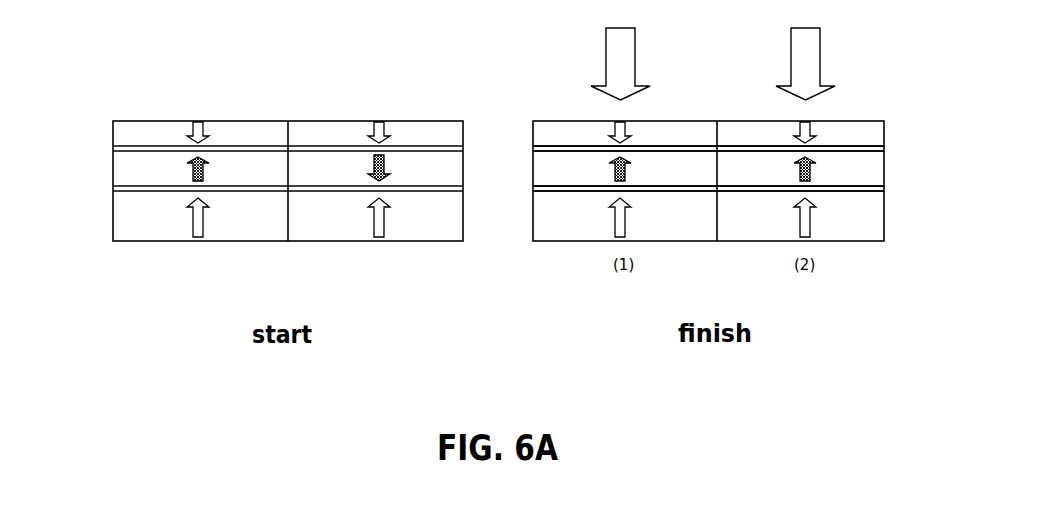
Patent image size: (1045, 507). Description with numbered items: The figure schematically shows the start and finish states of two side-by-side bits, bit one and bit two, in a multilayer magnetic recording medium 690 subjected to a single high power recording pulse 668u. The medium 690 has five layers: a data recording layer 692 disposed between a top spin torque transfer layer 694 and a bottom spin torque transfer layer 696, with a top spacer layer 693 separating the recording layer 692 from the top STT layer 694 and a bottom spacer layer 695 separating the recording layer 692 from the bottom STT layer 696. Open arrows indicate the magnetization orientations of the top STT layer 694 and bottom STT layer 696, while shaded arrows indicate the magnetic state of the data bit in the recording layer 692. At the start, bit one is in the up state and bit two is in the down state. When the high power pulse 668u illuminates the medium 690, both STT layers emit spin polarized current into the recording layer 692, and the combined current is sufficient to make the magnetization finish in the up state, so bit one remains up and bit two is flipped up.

The magnetic recording medium 690 is at (100, 120).
The top spacer layer 693 is at (533, 148).
The bottom spacer layer 695 is at (533, 193).
The top spin torque transfer layer 694 is at (881, 130).
The data recording layer 692 is at (880, 167).
The bottom spin torque transfer layer 696 is at (880, 208).
The high power recording pulse 668u is at (612, 58).